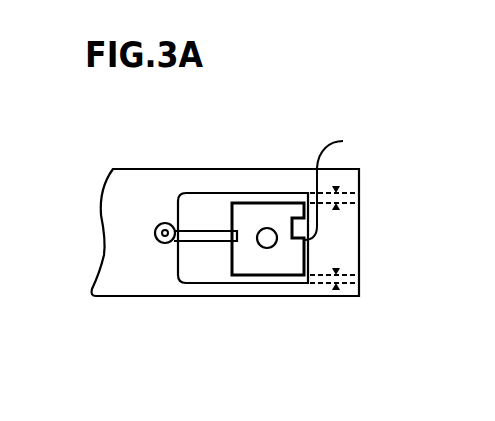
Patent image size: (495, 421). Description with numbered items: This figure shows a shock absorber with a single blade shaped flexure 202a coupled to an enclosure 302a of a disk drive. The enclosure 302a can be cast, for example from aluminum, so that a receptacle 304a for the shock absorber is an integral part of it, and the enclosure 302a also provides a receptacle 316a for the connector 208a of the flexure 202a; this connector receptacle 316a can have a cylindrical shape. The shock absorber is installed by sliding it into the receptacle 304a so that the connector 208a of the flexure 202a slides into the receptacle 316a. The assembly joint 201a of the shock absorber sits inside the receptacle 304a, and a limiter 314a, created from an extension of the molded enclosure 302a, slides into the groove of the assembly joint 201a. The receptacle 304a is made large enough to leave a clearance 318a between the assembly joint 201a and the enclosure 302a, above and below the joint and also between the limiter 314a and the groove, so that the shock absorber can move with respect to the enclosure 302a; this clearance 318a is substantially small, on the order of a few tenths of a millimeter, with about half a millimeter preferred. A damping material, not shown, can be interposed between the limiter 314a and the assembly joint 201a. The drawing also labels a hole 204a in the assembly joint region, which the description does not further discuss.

The enclosure 302a is at (127, 197).
The receptacle for connector 316a is at (160, 223).
The blade shaped flexure 202a is at (208, 233).
The receptacle 304a is at (270, 203).
The limiter 314a is at (382, 185).
The clearance 318a is at (358, 200).
The Hole 204a is at (267, 248).
The assembly joint 201a is at (245, 258).
The connector 208a is at (165, 243).